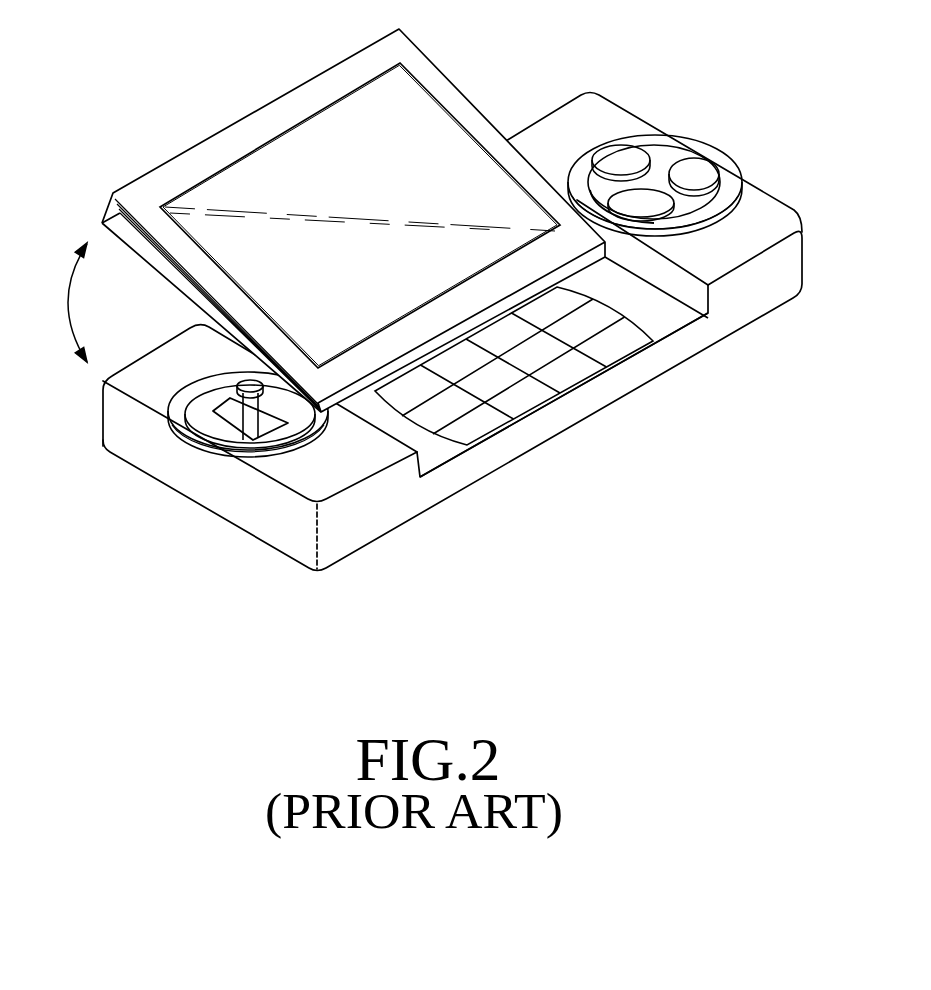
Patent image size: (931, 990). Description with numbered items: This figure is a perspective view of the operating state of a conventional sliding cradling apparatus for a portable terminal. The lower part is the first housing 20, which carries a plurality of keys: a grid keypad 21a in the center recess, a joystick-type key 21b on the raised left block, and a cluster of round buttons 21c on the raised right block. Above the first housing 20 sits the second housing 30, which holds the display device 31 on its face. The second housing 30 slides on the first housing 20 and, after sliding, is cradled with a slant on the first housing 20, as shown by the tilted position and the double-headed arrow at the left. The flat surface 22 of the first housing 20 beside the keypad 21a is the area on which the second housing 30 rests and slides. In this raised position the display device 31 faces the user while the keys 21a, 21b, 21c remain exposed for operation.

The first housing 20 is at (244, 556).
The key 21a is at (525, 398).
The key 21b is at (252, 414).
The key 21c is at (697, 172).
The mounting surface of main body 22 is at (660, 325).
The second housing 30 is at (247, 115).
The display device 31 is at (340, 127).